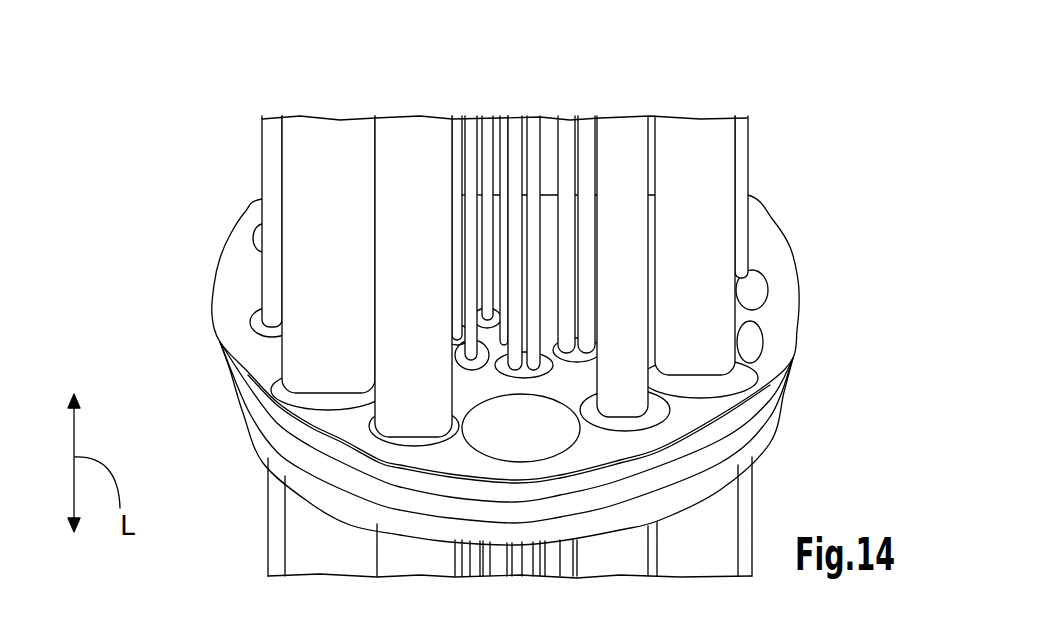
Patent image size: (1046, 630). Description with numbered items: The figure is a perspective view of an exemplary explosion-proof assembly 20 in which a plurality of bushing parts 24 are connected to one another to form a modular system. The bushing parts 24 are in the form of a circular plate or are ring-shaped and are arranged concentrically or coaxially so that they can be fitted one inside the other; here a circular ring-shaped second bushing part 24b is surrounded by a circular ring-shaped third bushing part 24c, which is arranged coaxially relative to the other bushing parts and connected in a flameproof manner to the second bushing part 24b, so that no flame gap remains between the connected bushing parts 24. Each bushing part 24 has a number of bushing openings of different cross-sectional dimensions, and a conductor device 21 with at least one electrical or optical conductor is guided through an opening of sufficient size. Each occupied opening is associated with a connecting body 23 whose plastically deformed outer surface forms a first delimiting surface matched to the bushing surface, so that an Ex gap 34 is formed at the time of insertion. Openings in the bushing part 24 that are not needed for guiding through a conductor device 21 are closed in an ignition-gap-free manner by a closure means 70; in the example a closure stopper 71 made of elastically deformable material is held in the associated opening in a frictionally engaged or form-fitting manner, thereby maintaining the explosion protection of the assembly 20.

The explosion-proof assembly 20 is at (509, 306).
The conductor device 21 is at (268, 117).
The connecting body 23 is at (258, 327).
The bushing part 24 is at (556, 375).
The second bushing part 24b is at (471, 394).
The third bushing part 24c is at (768, 232).
The Ex gap 34 is at (256, 312).
The closure means 70 is at (694, 431).
The closure stopper 71 is at (530, 438).